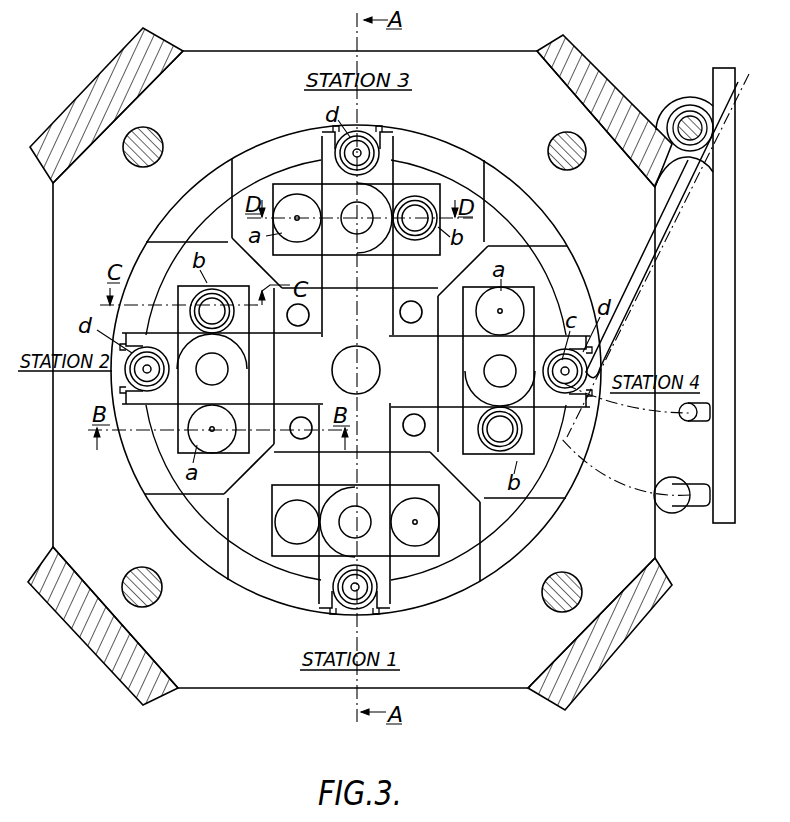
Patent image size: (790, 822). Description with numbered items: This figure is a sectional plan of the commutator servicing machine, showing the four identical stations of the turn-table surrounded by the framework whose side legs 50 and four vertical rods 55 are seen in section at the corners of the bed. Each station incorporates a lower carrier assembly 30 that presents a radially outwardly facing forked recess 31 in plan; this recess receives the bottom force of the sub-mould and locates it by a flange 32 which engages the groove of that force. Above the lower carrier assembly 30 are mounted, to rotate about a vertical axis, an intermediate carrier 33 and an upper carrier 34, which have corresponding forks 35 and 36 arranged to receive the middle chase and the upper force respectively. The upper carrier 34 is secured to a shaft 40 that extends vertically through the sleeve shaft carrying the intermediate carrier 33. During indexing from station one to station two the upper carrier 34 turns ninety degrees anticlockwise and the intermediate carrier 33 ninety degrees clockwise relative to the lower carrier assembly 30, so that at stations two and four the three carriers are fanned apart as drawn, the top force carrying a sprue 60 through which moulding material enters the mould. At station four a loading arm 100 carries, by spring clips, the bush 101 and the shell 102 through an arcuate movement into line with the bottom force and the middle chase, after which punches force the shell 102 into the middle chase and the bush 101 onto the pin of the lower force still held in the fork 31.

The lower carrier assembly 30 is at (388, 153).
The forked recess 31 is at (358, 133).
The flange 32 is at (141, 409).
The intermediate carrier 33 is at (178, 287).
The upper carrier 34 is at (254, 454).
The fork 35 is at (231, 290).
The fork 36 is at (289, 183).
The shaft 40 is at (218, 364).
The side legs 50 is at (56, 127).
The vertical rods 55 is at (156, 131).
The sprue 60 is at (299, 217).
The loading arm 100 is at (645, 278).
The bush 101 is at (691, 423).
The shell 102 is at (681, 516).